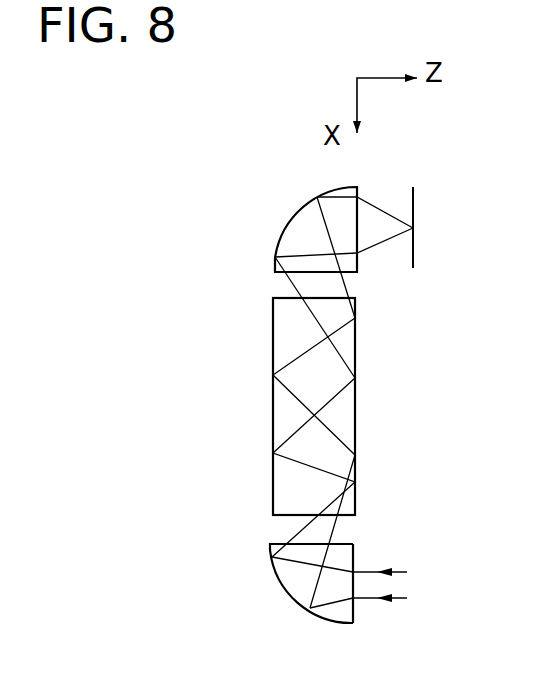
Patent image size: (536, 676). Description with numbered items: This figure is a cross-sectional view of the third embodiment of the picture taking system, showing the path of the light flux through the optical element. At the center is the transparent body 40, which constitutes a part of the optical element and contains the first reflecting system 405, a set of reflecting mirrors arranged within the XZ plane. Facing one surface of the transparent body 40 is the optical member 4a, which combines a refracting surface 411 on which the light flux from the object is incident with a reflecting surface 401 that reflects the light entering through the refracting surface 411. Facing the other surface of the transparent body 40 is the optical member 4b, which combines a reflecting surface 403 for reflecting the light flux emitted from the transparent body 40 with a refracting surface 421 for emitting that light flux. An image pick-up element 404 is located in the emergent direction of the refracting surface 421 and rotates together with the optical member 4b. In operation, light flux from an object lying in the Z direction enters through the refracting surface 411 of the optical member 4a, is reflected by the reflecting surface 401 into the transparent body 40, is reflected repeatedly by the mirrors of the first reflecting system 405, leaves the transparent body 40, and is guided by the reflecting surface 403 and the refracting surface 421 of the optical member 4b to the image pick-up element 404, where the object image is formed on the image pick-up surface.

The transparent body 40 is at (315, 453).
The optical member 4a is at (274, 591).
The optical member 4b is at (279, 214).
The reflecting surface 401 is at (275, 573).
The reflecting surface 403 is at (288, 218).
The image pick-up element 404 is at (416, 212).
The first reflecting system 405 is at (273, 432).
The refracting surface 411 is at (355, 617).
The refracting surface 421 is at (358, 235).